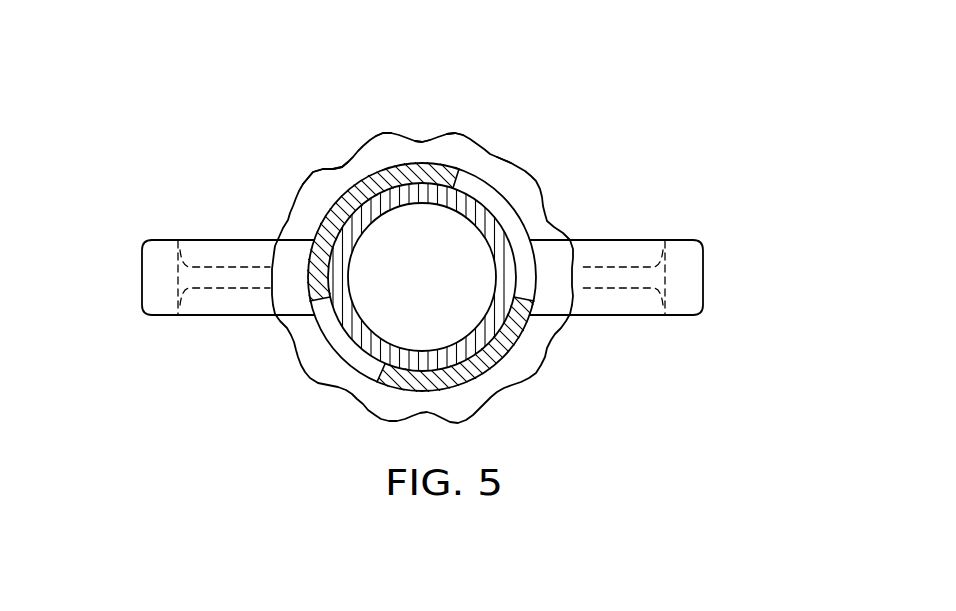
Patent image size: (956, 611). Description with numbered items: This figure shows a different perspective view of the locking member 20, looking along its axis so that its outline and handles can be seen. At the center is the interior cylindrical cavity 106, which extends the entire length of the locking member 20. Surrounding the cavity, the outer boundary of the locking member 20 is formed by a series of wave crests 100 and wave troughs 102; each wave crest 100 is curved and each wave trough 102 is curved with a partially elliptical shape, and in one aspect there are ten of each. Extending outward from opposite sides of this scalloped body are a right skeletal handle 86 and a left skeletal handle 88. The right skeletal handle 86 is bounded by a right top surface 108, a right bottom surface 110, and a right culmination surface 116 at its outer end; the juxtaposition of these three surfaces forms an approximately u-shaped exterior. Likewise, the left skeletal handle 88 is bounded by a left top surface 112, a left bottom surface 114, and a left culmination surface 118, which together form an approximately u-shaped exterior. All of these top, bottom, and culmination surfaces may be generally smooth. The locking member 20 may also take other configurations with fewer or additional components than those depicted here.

The locking member 20 is at (425, 305).
The right skeletal handle 86 is at (657, 221).
The left skeletal handle 88 is at (187, 227).
The wave crests 100 is at (313, 171).
The wave troughs 102 is at (353, 160).
The interior cylindrical cavity 106 is at (398, 310).
The right top surface 108 is at (611, 239).
The right bottom surface 110 is at (635, 317).
The left top surface 112 is at (215, 239).
The left bottom surface 114 is at (222, 317).
The right culmination surface 116 is at (703, 277).
The left culmination surface 118 is at (142, 279).